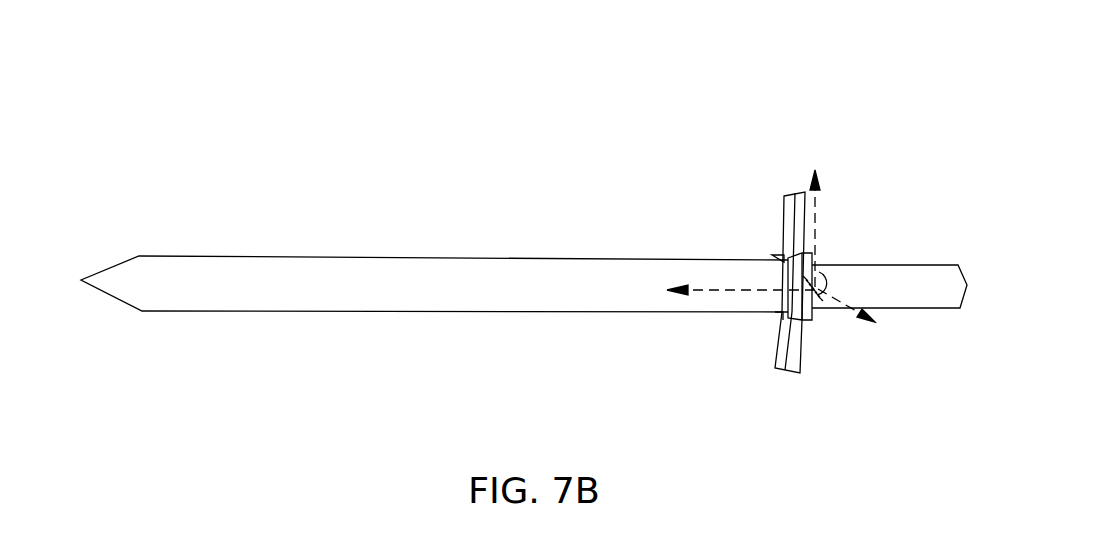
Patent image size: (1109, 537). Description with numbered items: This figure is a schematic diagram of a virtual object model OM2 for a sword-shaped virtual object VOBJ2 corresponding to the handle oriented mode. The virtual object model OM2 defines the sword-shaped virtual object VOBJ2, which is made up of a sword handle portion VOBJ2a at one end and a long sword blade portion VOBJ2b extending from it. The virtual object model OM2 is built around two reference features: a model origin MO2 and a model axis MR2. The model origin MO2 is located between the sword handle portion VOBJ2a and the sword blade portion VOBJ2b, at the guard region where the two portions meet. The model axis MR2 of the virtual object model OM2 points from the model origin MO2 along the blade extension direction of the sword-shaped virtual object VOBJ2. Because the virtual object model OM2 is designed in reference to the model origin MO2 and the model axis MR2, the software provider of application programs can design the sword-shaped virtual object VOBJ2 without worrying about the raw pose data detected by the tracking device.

The virtual object model OM2 is at (731, 106).
The model origin MO2 is at (833, 278).
The sword-shaped virtual object VOBJ2 is at (568, 258).
The sword handle portion VOBJ2a is at (903, 293).
The sword blade portion VOBJ2b is at (582, 298).
The model axis MR2 is at (707, 290).